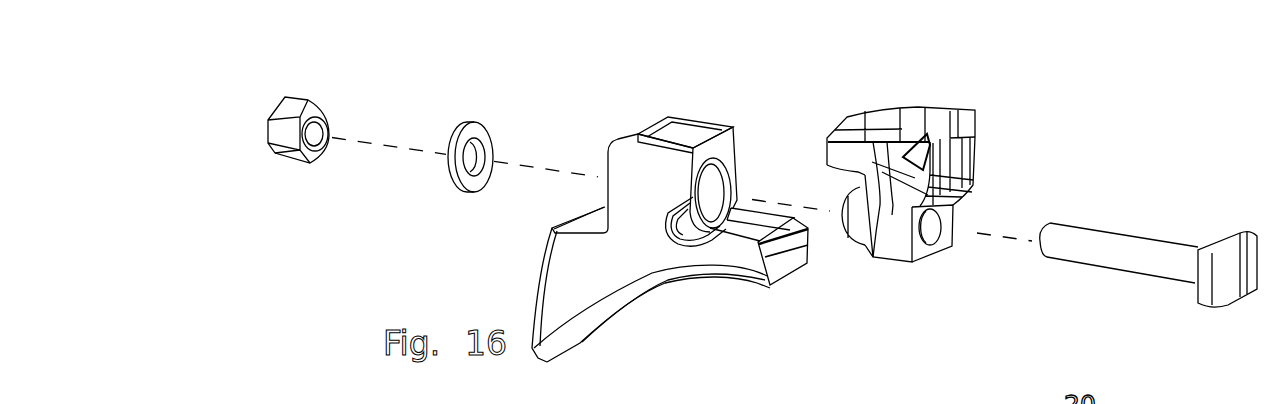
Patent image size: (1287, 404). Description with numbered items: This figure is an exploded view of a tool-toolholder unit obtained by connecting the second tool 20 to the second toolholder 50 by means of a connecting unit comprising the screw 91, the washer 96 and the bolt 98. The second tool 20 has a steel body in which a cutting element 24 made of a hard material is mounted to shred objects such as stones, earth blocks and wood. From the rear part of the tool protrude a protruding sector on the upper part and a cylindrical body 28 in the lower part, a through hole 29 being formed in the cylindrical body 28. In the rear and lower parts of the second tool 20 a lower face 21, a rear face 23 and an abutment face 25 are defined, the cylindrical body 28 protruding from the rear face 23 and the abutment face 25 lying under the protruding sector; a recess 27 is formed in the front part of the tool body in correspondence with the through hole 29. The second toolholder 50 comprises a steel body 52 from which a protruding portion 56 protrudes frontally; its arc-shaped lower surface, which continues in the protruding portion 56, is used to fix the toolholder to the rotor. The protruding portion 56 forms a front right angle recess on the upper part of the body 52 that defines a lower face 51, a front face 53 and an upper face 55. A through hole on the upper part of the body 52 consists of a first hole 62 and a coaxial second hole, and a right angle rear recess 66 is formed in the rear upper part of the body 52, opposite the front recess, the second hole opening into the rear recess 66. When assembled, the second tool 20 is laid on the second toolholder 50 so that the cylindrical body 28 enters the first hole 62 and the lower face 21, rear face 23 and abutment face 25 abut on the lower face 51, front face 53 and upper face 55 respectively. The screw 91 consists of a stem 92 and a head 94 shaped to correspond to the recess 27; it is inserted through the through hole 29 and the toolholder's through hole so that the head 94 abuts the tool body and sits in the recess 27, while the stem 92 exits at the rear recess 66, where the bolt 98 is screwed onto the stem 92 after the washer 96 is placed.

The second tool 20 is at (912, 98).
The lower face 21 is at (892, 262).
The rear face 23 is at (868, 245).
The cutting element 24 is at (970, 127).
The abutment face 25 is at (830, 177).
The recess 27 is at (951, 209).
The cylindrical body 28 is at (858, 195).
The through hole 29 is at (928, 236).
The second toolholder 50 is at (627, 118).
The lower face 51 is at (783, 220).
The body 52 is at (618, 258).
The front face 53 is at (728, 147).
The upper face 55 is at (678, 128).
The protruding portion 56 is at (752, 263).
The first hole 62 is at (710, 201).
The rear recess 66 is at (588, 214).
The screw 91 is at (1182, 206).
The stem 92 is at (1118, 250).
The head 94 is at (1242, 262).
The washer 96 is at (462, 192).
The bolt 98 is at (284, 140).